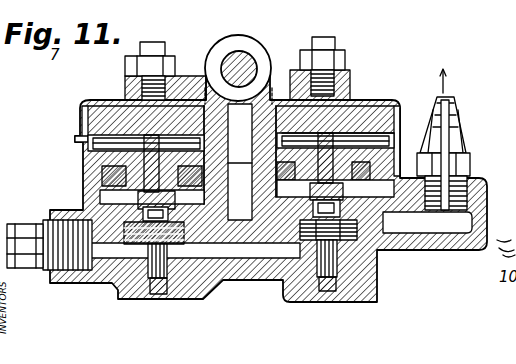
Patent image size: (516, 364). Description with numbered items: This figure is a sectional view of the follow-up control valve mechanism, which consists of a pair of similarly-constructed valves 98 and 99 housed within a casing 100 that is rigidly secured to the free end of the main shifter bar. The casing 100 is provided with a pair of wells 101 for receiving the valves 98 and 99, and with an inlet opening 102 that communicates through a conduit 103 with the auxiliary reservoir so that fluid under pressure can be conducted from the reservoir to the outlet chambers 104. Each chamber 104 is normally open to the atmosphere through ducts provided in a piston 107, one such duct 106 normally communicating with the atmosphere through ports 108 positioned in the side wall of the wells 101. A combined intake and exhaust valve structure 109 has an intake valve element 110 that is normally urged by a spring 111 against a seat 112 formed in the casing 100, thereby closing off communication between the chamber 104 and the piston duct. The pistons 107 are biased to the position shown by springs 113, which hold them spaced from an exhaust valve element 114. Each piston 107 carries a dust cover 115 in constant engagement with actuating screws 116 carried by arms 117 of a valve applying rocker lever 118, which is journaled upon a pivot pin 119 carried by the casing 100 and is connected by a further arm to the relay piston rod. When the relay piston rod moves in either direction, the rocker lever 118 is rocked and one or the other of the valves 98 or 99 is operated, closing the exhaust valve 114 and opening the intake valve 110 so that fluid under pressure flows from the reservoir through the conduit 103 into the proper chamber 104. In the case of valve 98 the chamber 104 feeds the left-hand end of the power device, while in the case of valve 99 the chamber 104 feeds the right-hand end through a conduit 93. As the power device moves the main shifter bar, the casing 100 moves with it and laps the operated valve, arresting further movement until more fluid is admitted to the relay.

The conduit 93 is at (457, 108).
The valve 98 is at (80, 95).
The valve 99 is at (404, 92).
The casing 100 is at (270, 268).
The wells 101 is at (241, 162).
The inlet opening 102 is at (110, 268).
The conduit 103 is at (14, 268).
The outlet chambers 104 is at (100, 188).
The duct 106 is at (120, 110).
The piston 107 is at (82, 112).
The ports 108 is at (88, 153).
The combined intake and exhaust valve structure 109 is at (378, 252).
The intake valve element 110 is at (186, 249).
The spring 111 is at (118, 302).
The seat 112 is at (125, 209).
The springs 113 is at (100, 178).
The exhaust valve element 114 is at (241, 179).
The dust cover 115 is at (82, 126).
The actuating screws 116 is at (154, 43).
The arms 117 is at (189, 73).
The valve applying rocker lever 118 is at (262, 42).
The pivot pin 119 is at (240, 57).